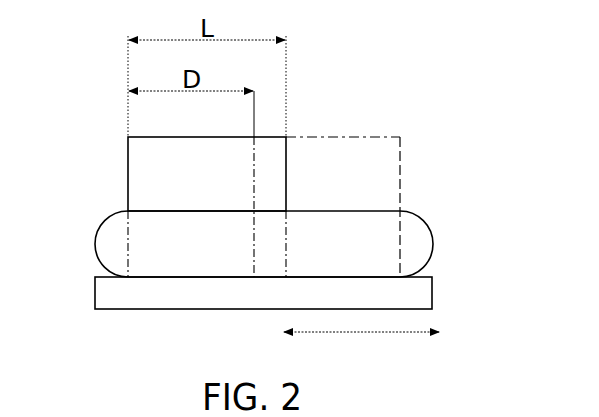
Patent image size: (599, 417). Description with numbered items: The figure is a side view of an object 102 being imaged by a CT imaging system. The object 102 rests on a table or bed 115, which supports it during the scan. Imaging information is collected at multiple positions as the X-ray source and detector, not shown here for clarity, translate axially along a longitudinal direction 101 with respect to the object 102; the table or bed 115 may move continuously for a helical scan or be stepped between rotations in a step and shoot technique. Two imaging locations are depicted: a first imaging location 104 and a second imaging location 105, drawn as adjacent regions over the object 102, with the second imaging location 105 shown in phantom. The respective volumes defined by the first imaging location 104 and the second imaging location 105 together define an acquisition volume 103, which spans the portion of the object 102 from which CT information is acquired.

The longitudinal direction 101 is at (361, 351).
The object 102 is at (434, 240).
The acquisition volume 103 is at (168, 258).
The first imaging location 104 is at (126, 171).
The second imaging location 105 is at (401, 173).
The table or bed 115 is at (433, 289).